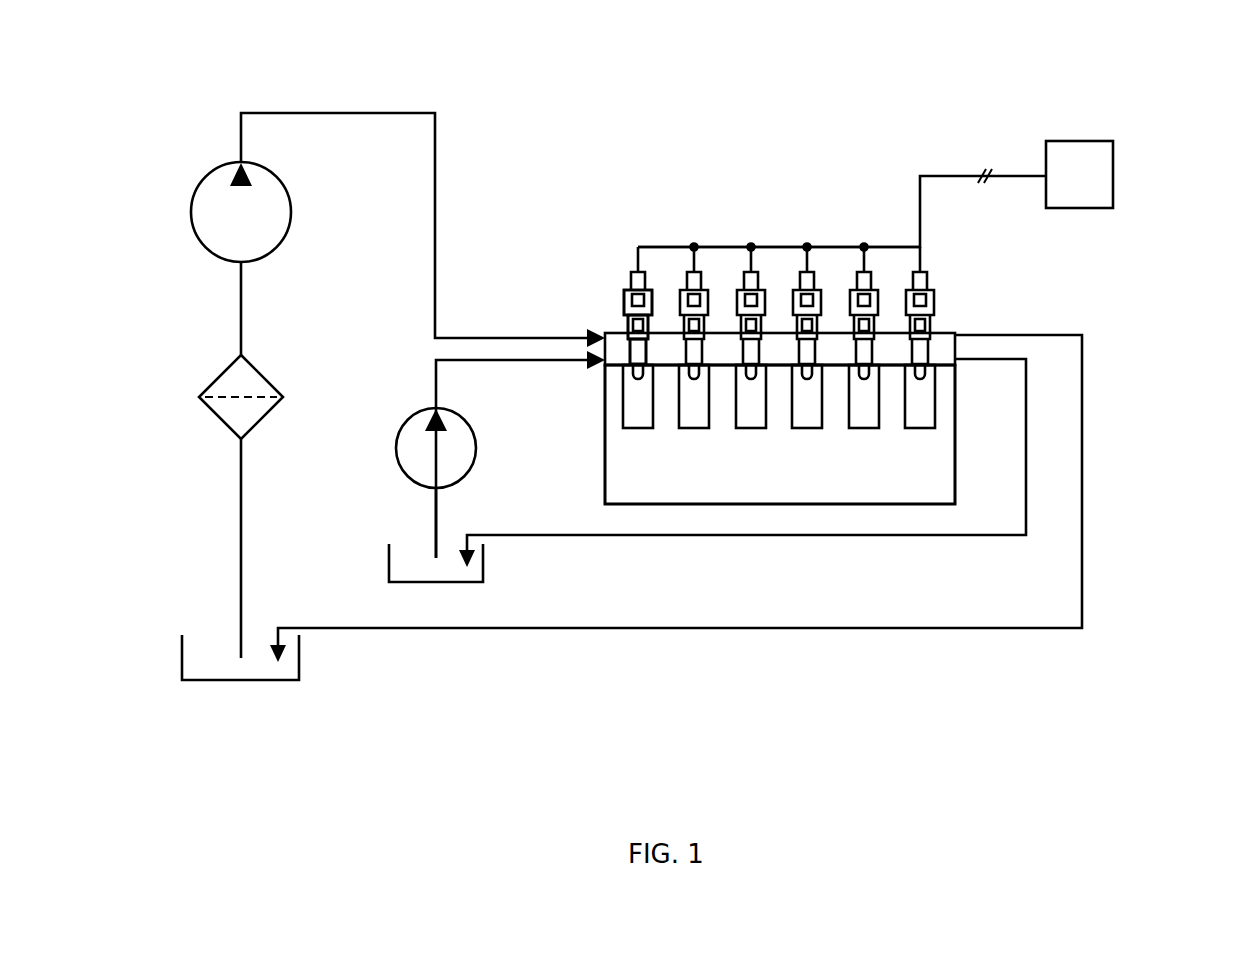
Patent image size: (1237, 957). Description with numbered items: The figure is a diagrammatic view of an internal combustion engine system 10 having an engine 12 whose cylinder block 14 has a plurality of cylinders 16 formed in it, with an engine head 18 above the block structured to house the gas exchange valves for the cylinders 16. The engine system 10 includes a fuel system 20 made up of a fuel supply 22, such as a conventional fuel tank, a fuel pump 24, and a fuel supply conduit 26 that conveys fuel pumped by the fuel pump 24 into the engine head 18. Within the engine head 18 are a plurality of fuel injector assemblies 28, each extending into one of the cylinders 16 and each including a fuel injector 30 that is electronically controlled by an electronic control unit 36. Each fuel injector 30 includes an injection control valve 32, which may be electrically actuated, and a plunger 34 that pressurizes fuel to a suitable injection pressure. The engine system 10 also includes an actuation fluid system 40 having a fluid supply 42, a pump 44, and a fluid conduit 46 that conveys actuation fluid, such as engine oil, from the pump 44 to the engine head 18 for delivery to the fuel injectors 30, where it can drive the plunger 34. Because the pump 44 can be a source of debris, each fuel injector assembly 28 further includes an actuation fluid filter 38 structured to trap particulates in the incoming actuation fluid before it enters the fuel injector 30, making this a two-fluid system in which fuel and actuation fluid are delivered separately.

The internal combustion engine system 10 is at (1175, 108).
The engine 12 is at (972, 488).
The cylinder block 14 is at (956, 455).
The cylinders 16 is at (626, 396).
The engine head 18 is at (945, 333).
The fuel system 20 is at (398, 498).
The fuel supply 22 is at (389, 554).
The fuel pump 24 is at (398, 424).
The fuel supply conduit 26 is at (500, 362).
The fuel injector assemblies 28 is at (603, 278).
The fuel injector 30 is at (646, 294).
The injection control valve 32 is at (625, 294).
The plunger 34 is at (628, 320).
The electronic control unit 36 is at (1080, 141).
The actuation fluid filter 38 is at (648, 350).
The actuation fluid system 40 is at (194, 294).
The fluid supply 42 is at (182, 640).
The pump 44 is at (192, 184).
The fluid conduit 46 is at (498, 336).